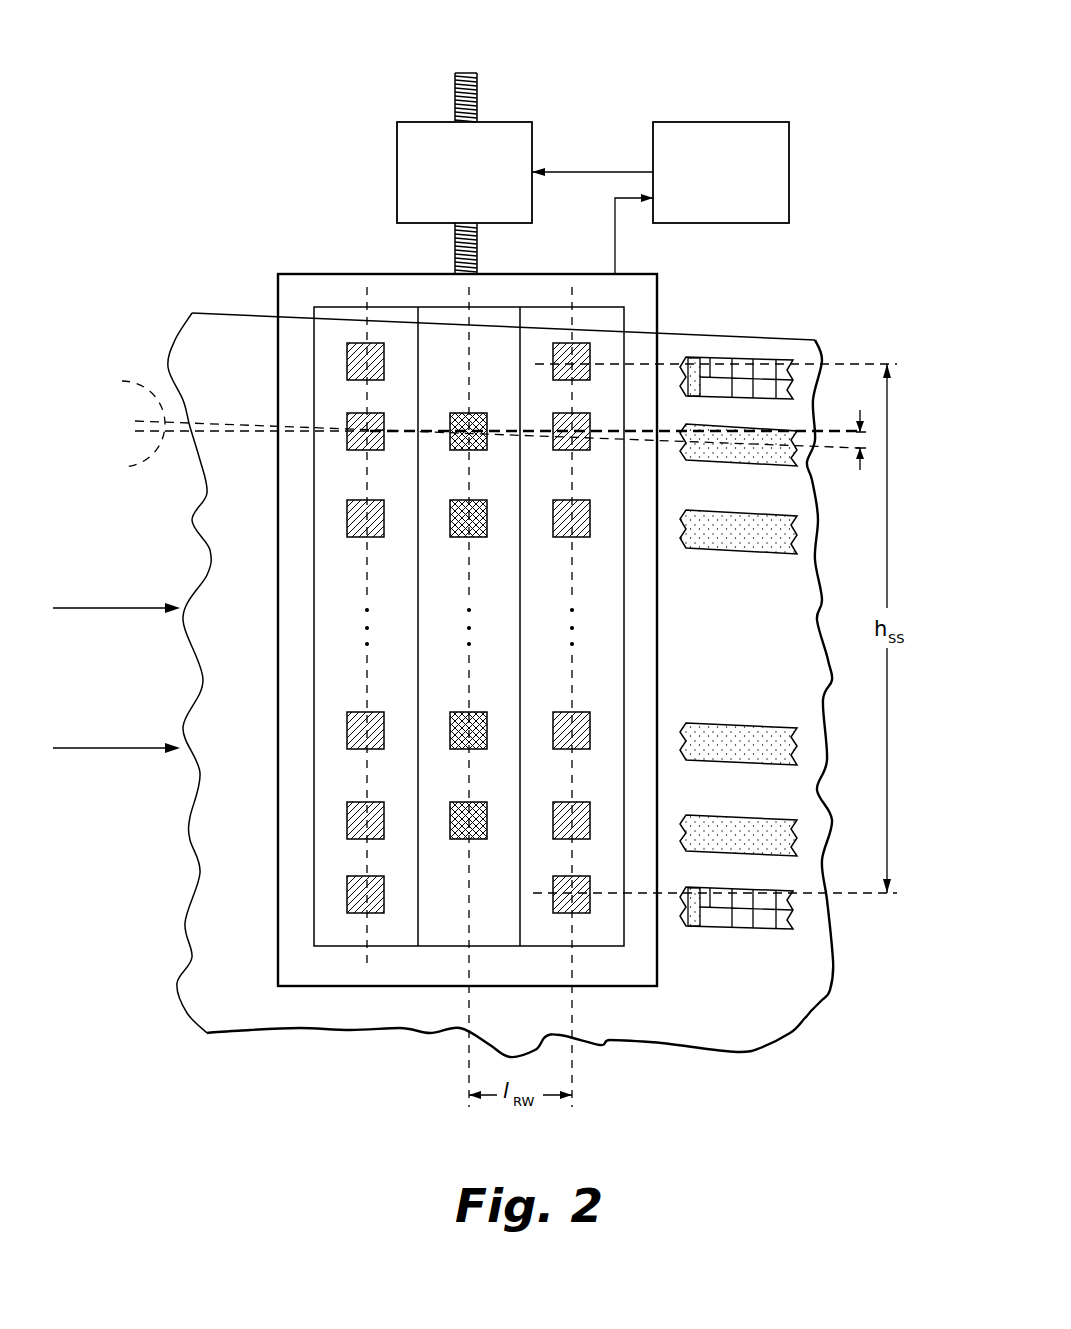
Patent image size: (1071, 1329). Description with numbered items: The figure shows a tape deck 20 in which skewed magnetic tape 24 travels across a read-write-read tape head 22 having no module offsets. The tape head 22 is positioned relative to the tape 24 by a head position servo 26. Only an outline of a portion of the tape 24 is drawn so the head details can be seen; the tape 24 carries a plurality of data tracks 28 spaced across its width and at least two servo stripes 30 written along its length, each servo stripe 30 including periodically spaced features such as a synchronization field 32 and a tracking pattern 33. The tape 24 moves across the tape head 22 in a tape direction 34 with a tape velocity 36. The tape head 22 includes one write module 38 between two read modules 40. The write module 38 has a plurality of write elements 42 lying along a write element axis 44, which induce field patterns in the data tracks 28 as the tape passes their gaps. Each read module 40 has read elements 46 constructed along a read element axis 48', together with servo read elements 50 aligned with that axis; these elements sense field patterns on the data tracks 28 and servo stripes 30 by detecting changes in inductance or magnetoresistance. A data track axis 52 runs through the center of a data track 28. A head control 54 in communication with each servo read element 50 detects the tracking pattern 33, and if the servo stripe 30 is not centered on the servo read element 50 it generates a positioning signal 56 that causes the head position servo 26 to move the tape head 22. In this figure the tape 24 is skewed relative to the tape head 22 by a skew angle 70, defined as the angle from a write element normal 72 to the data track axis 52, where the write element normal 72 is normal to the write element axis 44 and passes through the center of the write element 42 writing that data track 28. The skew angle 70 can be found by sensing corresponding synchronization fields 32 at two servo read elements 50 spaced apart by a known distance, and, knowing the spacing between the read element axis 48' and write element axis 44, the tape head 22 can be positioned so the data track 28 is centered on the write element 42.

The tape deck 20 is at (152, 186).
The tape head 22 is at (327, 273).
The magnetic tape 24 is at (821, 356).
The head position servo 26 is at (503, 121).
The data track 28 is at (746, 466).
The servo stripe 30 is at (746, 397).
The synchronization field 32 is at (693, 356).
The tracking pattern 33 is at (758, 340).
The tape direction 34 is at (120, 612).
The tape velocity 36 is at (120, 752).
The write module 38 is at (445, 946).
The read module 40 is at (340, 946).
The write element 42 is at (462, 450).
The write element axis 44 is at (467, 1070).
The read element 46 is at (565, 453).
The read element axis 48' is at (610, 701).
The servo read element 50 is at (565, 382).
The data track axis 52 is at (476, 417).
The head control 54 is at (733, 121).
The positioning signal 56 is at (575, 170).
The skew angle 70 is at (852, 434).
The write element normal 72 is at (476, 452).